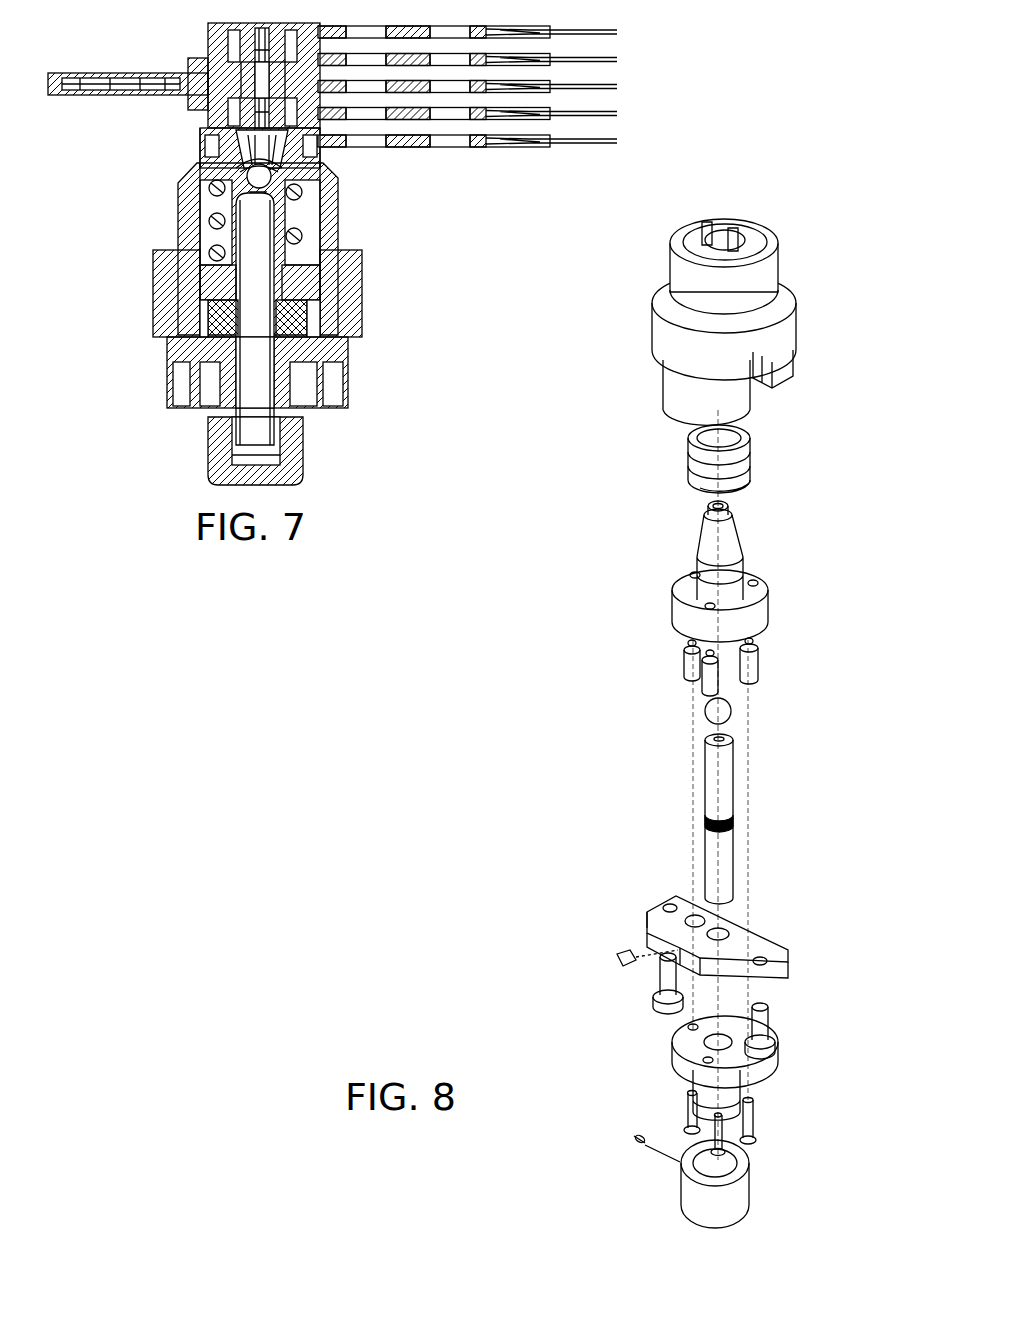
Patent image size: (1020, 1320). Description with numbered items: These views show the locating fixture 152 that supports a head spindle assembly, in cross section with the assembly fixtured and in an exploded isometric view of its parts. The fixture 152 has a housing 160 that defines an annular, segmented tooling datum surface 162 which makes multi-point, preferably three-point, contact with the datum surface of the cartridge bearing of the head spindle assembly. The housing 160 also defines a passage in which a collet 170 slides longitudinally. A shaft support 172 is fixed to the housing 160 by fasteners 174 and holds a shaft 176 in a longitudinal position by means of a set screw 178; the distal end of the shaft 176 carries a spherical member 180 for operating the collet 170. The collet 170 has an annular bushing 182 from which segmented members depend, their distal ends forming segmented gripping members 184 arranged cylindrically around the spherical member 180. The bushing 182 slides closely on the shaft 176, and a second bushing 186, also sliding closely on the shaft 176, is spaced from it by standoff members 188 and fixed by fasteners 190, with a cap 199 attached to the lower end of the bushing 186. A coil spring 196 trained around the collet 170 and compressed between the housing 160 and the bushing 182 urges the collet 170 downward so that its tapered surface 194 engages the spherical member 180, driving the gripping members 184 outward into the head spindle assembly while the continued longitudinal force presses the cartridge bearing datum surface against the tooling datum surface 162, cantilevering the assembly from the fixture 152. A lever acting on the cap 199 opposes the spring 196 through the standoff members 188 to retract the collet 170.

In FIG. 7, the locating fixture 152 is at (405, 264).
In FIG. 8, the housing 160 is at (752, 222).
In FIG. 8, the tooling datum surface 162 is at (726, 218).
In FIG. 7, the collet 170 is at (302, 246).
In FIG. 8, the collet 170 is at (729, 546).
In FIG. 7, the shaft support 172 is at (204, 317).
In FIG. 8, the shaft support 172 is at (788, 972).
In FIG. 8, the fasteners 174 is at (653, 998).
In FIG. 7, the shaft 176 is at (255, 319).
In FIG. 8, the shaft 176 is at (703, 768).
In FIG. 8, the set screw 178 is at (620, 953).
In FIG. 7, the spherical member 180 is at (290, 200).
In FIG. 8, the spherical member 180 is at (732, 708).
In FIG. 7, the annular bushing 182 is at (172, 290).
In FIG. 8, the annular bushing 182 is at (672, 590).
In FIG. 8, the segmented gripping members 184 is at (708, 510).
In FIG. 7, the bushing 186 is at (183, 352).
In FIG. 8, the bushing 186 is at (672, 1042).
In FIG. 8, the standoff members 188 is at (700, 690).
In FIG. 8, the fasteners 190 is at (758, 1122).
In FIG. 7, the tapered surface 194 is at (238, 192).
In FIG. 7, the coil spring 196 is at (203, 217).
In FIG. 8, the coil spring 196 is at (752, 446).
In FIG. 7, the cap 199 is at (255, 451).
In FIG. 8, the cap 199 is at (742, 1220).